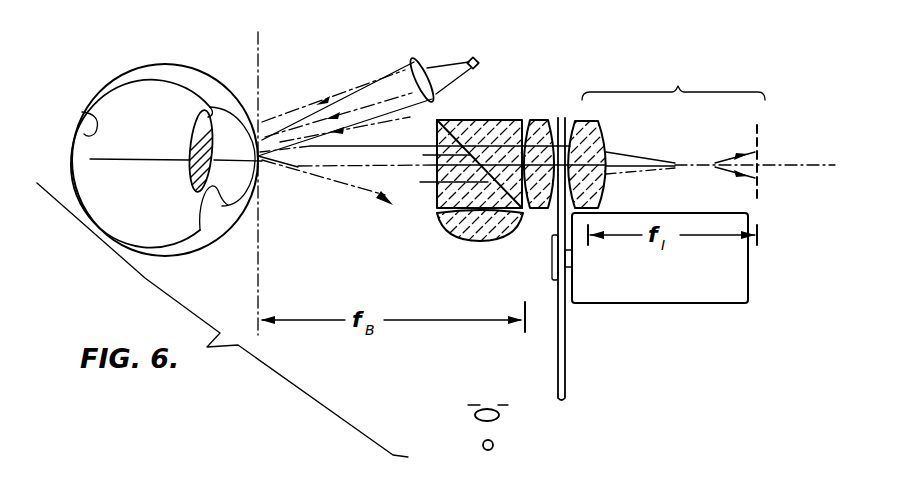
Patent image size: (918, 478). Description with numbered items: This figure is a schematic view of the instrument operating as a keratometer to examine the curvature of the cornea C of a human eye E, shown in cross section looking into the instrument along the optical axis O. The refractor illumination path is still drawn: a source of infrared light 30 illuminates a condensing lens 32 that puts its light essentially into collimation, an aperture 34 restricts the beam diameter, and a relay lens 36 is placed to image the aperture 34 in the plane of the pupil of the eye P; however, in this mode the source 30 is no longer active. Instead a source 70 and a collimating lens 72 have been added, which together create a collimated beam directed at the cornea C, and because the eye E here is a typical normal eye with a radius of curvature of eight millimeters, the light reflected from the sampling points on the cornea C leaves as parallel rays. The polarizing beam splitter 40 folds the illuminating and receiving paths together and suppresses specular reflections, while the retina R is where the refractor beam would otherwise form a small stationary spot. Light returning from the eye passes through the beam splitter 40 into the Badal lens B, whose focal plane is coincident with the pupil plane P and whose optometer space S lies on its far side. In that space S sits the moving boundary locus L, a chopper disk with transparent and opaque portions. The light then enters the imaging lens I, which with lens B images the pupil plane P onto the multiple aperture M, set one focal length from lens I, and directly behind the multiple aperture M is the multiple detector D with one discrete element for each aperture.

The eye E is at (174, 63).
The retina R is at (82, 112).
The cornea C is at (240, 218).
The pupil plane P is at (261, 50).
The multiple aperture M is at (259, 187).
The collimating lens 72 is at (415, 60).
The source 70 is at (478, 62).
The polarizing beam splitter 40 is at (470, 119).
The relay lens 36 is at (437, 219).
The Badal lens B is at (540, 119).
The moving boundary locus L is at (568, 392).
The imaging lens I is at (597, 121).
The optometer space S is at (673, 80).
The multiple detector D is at (763, 160).
The optical axis O is at (803, 165).
The aperture 34 is at (500, 404).
The condensing lens 32 is at (474, 415).
The source of infrared light 30 is at (482, 445).